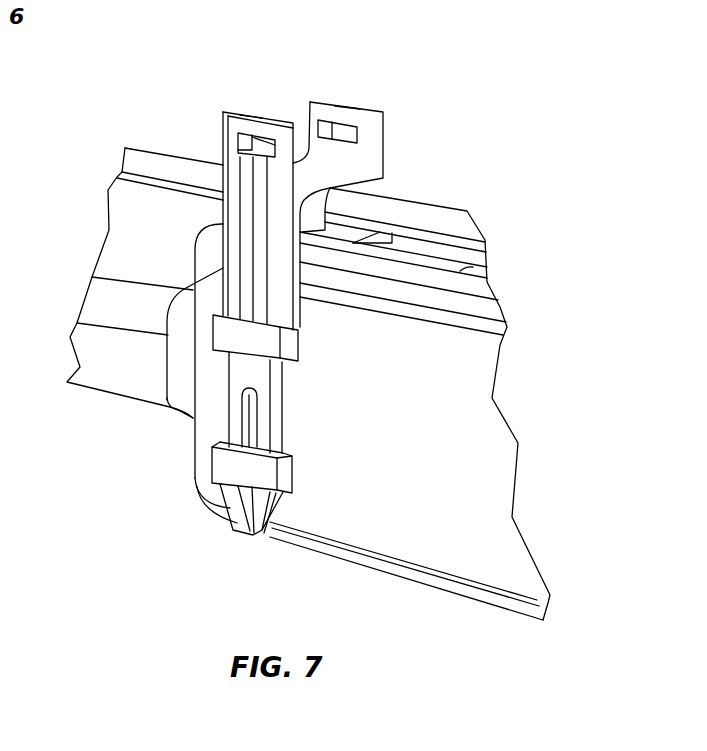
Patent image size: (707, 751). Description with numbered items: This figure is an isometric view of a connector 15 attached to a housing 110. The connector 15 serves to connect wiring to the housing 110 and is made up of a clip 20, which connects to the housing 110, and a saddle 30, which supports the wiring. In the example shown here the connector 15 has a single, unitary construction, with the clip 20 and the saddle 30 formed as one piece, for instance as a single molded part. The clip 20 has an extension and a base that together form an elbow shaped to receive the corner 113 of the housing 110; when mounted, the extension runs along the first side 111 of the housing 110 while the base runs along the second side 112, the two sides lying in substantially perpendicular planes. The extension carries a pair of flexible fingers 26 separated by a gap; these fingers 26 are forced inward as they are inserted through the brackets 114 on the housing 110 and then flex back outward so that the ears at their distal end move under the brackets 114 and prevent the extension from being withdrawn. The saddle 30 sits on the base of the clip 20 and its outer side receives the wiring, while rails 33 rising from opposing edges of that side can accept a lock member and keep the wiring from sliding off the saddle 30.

The connector 15 is at (188, 105).
The clip 20 is at (233, 267).
The fingers 26 is at (232, 425).
The saddle 30 is at (362, 167).
The rails 33 is at (262, 127).
The housing 110 is at (132, 245).
The first side 111 is at (447, 533).
The second side 112 is at (450, 218).
The corner 113 is at (460, 270).
The brackets 114 is at (288, 342).